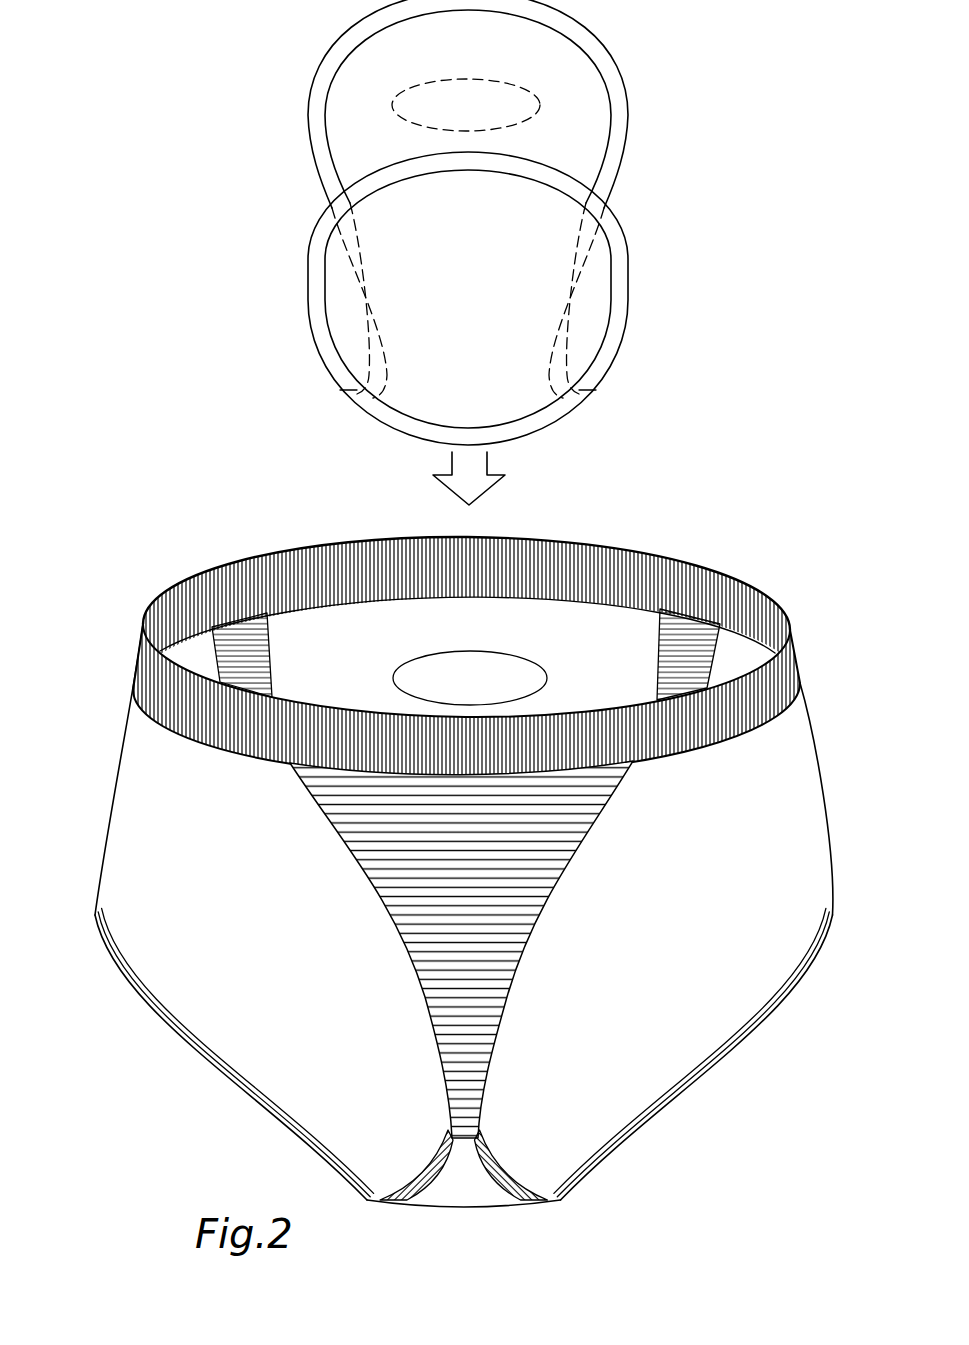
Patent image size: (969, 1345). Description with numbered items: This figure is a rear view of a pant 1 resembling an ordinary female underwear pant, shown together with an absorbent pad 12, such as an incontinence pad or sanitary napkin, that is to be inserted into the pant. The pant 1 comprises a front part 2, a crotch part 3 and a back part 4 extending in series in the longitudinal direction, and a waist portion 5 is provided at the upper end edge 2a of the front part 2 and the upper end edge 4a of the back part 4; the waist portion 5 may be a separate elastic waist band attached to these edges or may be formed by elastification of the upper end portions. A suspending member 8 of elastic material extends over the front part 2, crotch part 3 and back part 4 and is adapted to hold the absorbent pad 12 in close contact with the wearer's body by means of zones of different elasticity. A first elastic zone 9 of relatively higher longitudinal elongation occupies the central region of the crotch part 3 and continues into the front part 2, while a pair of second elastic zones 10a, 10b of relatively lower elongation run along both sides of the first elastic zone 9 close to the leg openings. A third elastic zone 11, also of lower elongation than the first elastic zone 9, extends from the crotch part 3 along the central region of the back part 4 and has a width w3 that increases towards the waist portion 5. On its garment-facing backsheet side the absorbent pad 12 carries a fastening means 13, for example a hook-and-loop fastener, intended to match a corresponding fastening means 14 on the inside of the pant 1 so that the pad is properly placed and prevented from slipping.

The pant 1 is at (214, 515).
The front part 2 is at (397, 630).
The upper end edge of the front part 2a is at (318, 608).
The crotch part 3 is at (500, 1214).
The back part 4 is at (145, 821).
The upper end edge of the back part 4a is at (162, 722).
The waist portion 5 is at (678, 578).
The suspending member 8 is at (552, 901).
The first elastic zone 9 is at (530, 613).
The second elastic zone 10a is at (690, 668).
The second elastic zone 10b is at (253, 671).
The third elastic zone 11 is at (430, 905).
The absorbent pad 12 is at (278, 126).
The fastening means 13 is at (450, 119).
The fastening means 14 is at (454, 692).
The width of the third elastic zone w3 is at (375, 997).